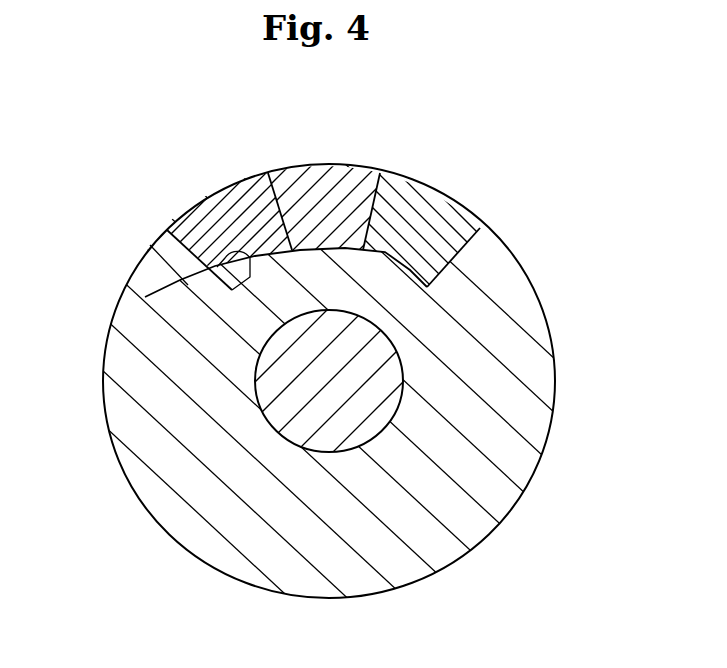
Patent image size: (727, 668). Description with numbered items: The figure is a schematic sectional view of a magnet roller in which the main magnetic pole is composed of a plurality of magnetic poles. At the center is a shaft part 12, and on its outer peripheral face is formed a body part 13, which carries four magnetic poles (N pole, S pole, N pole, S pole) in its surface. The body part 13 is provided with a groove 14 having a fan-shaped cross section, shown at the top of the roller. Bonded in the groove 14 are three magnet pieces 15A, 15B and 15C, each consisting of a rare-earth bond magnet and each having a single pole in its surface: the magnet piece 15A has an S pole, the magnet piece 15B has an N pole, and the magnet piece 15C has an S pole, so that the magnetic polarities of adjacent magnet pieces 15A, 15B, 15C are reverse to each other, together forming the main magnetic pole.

The shaft part 12 is at (367, 402).
The body part 13 is at (497, 295).
The groove 14 is at (147, 297).
The magnet piece 15A is at (253, 190).
The magnet piece 15B is at (352, 172).
The magnet piece 15C is at (460, 213).